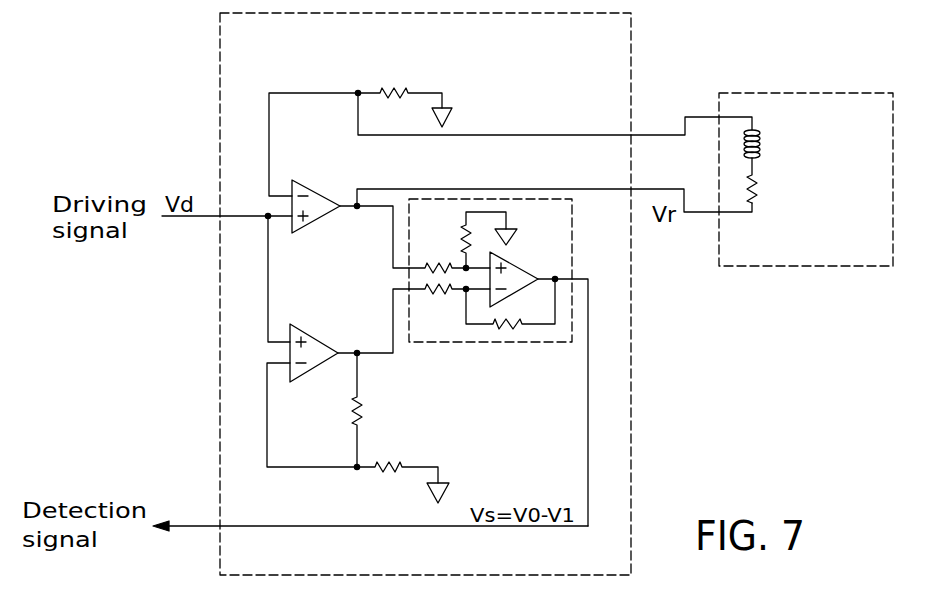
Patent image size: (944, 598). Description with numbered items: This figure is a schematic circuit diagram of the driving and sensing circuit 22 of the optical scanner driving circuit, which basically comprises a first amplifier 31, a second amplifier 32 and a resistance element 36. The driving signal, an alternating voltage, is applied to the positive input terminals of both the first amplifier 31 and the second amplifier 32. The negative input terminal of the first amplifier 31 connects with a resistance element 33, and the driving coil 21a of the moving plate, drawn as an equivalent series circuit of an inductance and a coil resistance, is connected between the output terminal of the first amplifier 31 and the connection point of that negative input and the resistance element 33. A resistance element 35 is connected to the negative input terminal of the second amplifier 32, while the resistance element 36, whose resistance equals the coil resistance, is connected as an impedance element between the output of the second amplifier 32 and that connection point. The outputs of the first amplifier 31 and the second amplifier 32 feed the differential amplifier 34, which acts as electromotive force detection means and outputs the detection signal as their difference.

The driving and sensing circuit 22 is at (220, 30).
The first amplifier 31 is at (347, 183).
The second amplifier 32 is at (345, 323).
The resistance element 33 is at (410, 92).
The differential amplifier 34 is at (493, 345).
The resistance element 35 is at (402, 463).
The resistance element 36 is at (363, 397).
The driving coil 21a is at (740, 268).